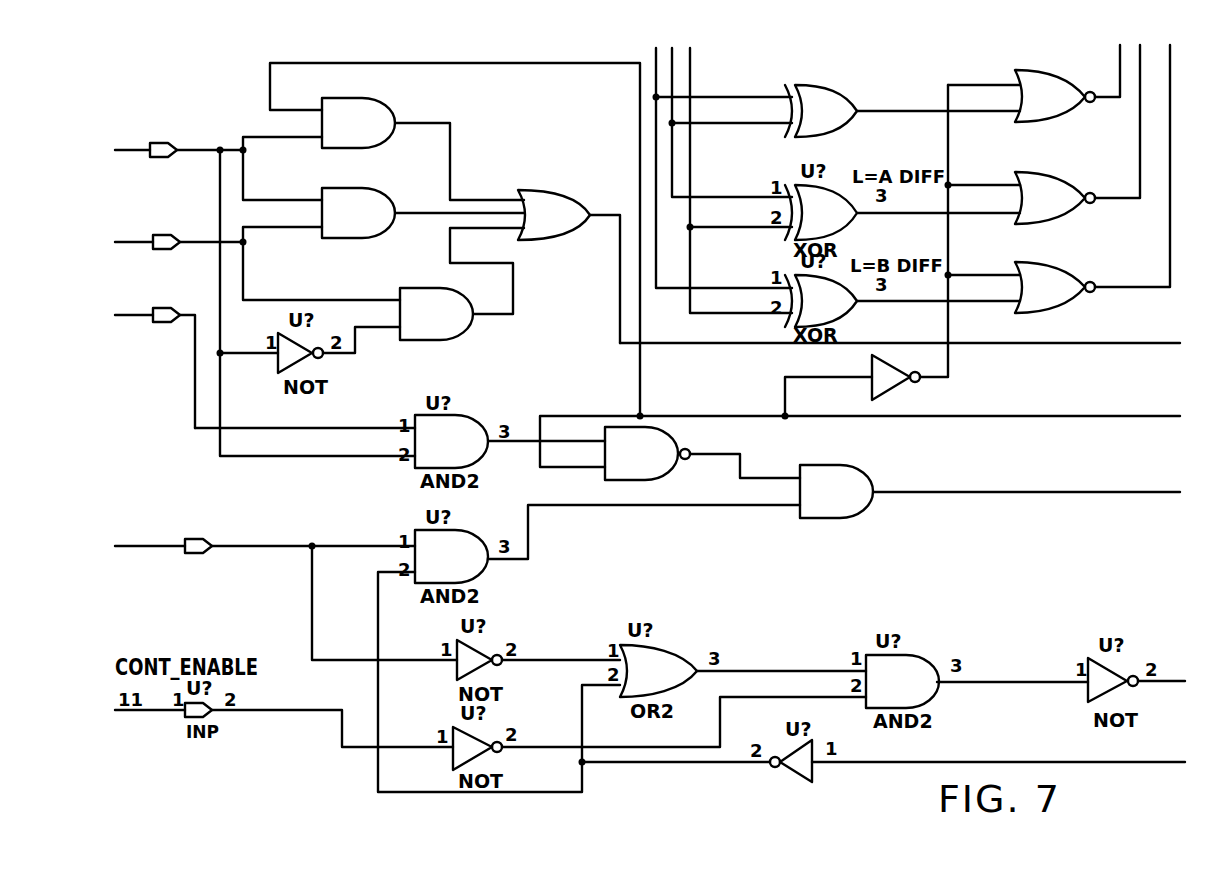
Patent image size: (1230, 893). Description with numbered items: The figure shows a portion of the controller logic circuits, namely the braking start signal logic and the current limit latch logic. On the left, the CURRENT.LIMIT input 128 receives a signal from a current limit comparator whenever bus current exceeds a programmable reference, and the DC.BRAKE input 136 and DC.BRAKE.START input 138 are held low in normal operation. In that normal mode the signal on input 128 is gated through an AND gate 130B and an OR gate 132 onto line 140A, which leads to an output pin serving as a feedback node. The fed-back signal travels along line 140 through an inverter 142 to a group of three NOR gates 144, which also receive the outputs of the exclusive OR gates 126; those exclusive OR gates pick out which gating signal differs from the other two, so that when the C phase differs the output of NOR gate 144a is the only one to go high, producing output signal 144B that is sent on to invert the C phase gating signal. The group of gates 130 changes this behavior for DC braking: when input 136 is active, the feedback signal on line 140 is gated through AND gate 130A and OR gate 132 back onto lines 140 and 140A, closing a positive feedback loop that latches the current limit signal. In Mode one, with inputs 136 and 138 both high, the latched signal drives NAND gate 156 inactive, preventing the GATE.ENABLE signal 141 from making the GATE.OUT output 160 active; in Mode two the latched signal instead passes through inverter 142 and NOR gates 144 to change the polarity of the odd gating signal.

The exclusive OR gates 126 is at (793, 78).
The current limit input 128 is at (150, 244).
The group of gates 130 is at (344, 63).
The AND gate 130A is at (393, 112).
The AND gate 130B is at (468, 335).
The OR gate 132 is at (550, 188).
The DC.BRAKE input 136 is at (147, 150).
The DC.BRAKE.START input 138 is at (150, 320).
The current limit feedback line 140 is at (1078, 416).
The current limit output line 140A is at (1098, 343).
The GATE.ENABLE signal 141 is at (237, 545).
The inverter 142 is at (905, 388).
The NOR gates 144 is at (1056, 190).
The output signal 144B is at (1112, 72).
The NOR gate 144a is at (1078, 114).
The NAND gate 156 is at (680, 433).
The GATE.OUT output 160 is at (1070, 492).